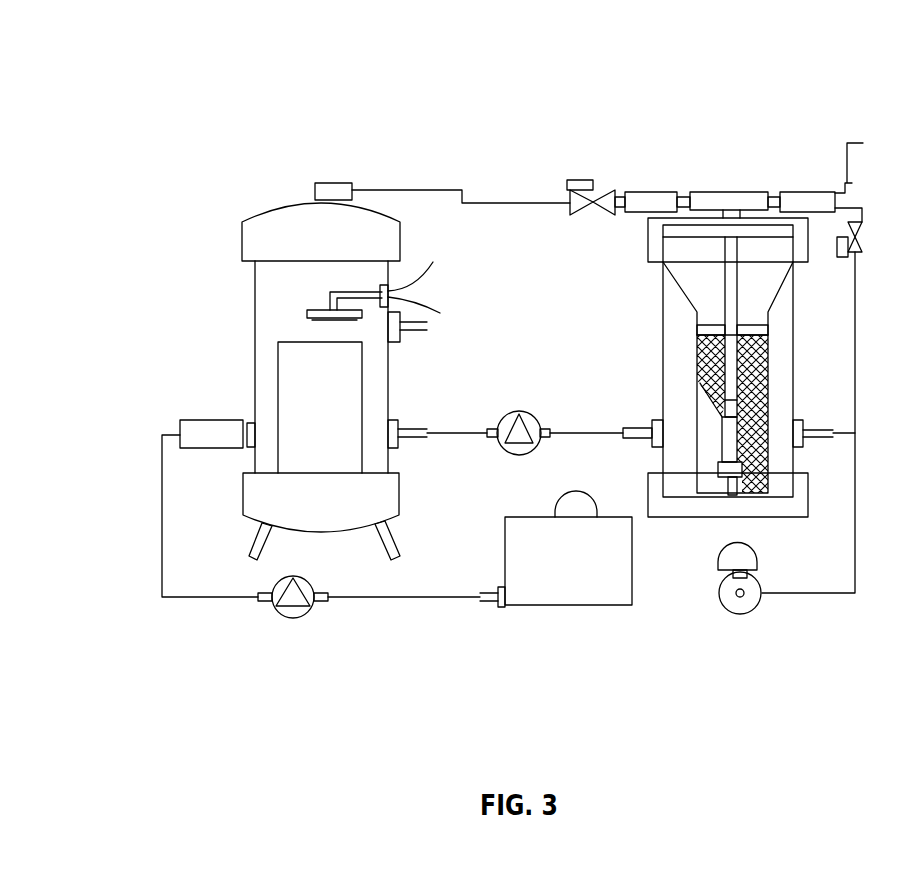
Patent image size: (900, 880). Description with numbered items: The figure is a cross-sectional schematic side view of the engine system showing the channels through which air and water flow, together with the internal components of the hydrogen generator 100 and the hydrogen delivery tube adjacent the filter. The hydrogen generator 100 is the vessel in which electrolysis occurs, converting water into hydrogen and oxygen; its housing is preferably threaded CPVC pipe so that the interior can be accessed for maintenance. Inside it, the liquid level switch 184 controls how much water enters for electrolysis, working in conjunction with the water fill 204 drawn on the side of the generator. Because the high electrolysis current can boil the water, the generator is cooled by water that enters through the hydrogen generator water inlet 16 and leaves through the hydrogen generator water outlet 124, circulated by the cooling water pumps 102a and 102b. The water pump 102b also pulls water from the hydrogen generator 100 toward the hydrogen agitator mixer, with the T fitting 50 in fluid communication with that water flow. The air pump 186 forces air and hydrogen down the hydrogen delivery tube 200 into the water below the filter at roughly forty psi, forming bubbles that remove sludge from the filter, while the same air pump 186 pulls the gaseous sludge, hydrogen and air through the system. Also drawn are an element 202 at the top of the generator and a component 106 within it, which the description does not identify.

The hydrogen generator 100 is at (252, 205).
The vent line 202 is at (398, 187).
The hydrogen generator water outlet 124 is at (425, 327).
The liquid level switch 184 is at (310, 308).
The water fill 204 is at (182, 420).
The treatment chamber 106 is at (280, 443).
The cooling water pump 102a is at (280, 608).
The water pump 102b is at (536, 420).
The hydrogen generator water inlet 16 is at (427, 430).
The T fitting 50 is at (722, 188).
The hydrogen delivery tube 200 is at (733, 442).
The air pump 186 is at (720, 597).